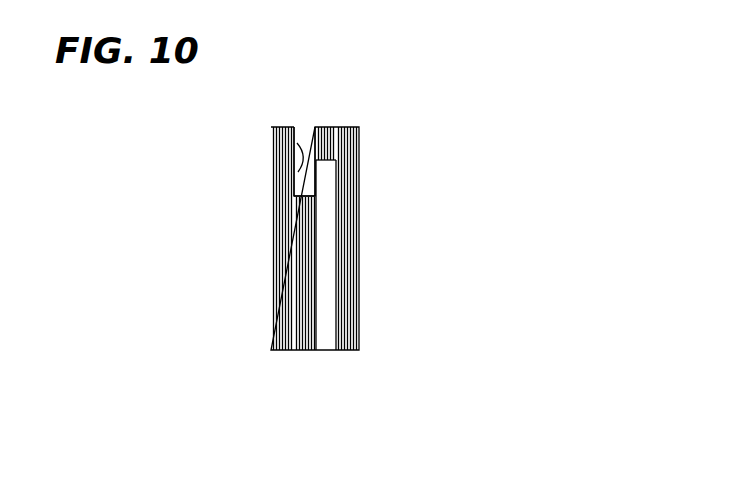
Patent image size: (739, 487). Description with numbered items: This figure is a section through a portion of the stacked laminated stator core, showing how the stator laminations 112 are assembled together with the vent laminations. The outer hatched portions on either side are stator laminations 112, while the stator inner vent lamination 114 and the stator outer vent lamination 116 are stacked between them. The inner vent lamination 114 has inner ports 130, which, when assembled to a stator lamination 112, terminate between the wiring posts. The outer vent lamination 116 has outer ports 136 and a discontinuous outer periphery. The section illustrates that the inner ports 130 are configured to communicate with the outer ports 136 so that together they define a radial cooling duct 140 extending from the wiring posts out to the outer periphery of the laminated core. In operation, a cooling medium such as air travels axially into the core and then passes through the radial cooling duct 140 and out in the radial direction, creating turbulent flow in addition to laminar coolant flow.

The stator lamination 112 is at (276, 127).
The stator inner vent lamination 114 is at (333, 351).
The stator outer vent lamination 116 is at (305, 351).
The inner ports 130 is at (336, 259).
The outer ports 136 is at (313, 169).
The radial cooling duct 140 is at (308, 138).